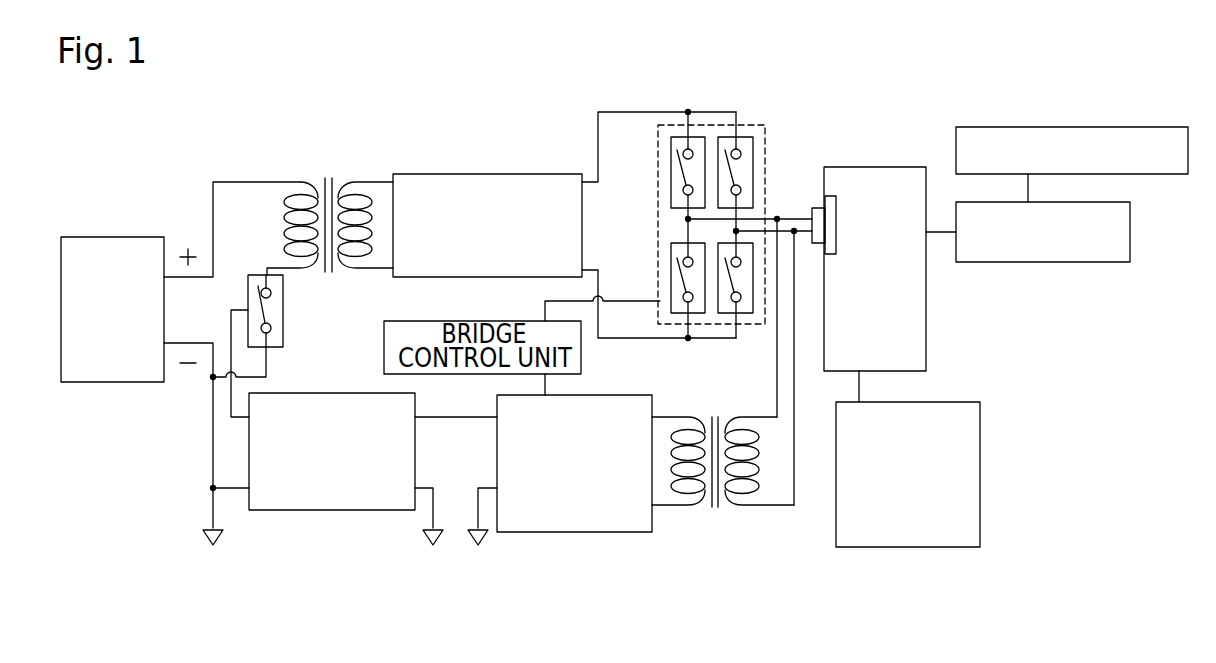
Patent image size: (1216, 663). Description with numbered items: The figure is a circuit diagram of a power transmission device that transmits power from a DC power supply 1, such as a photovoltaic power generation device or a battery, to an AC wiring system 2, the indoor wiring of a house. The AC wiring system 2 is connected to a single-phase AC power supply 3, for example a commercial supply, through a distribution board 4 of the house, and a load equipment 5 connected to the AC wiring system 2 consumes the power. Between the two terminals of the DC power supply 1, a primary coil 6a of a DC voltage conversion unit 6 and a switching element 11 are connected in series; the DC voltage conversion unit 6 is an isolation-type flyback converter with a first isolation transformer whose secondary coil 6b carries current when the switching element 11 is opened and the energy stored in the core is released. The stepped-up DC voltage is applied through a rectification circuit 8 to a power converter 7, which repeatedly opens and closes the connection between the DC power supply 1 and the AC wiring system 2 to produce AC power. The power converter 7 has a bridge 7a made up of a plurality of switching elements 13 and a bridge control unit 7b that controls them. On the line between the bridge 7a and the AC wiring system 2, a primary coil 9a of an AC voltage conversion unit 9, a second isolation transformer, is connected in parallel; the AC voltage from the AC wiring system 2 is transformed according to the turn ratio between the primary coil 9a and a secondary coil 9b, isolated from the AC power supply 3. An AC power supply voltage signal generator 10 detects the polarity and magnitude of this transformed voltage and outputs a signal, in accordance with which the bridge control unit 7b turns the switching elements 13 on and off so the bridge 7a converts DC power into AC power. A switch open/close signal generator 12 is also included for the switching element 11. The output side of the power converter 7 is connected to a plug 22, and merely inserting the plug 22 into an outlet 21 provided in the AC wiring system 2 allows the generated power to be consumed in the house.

The DC power supply 1 is at (140, 237).
The AC wiring system 2 is at (926, 330).
The AC power supply 3 is at (1030, 127).
The distribution board 4 is at (1038, 262).
The load equipment 5 is at (980, 480).
The DC voltage conversion unit 6 is at (318, 198).
The primary coil 6a is at (290, 224).
The secondary coil 6b is at (362, 200).
The power converter 7 is at (696, 244).
The bridge 7a is at (700, 323).
The bridge control unit 7b is at (581, 353).
The rectification circuit 8 is at (535, 174).
The AC voltage conversion unit 9 is at (743, 484).
The primary coil 9a is at (750, 470).
The secondary coil 9b is at (688, 470).
The AC power supply voltage signal generator 10 is at (587, 532).
The switching element 11 is at (283, 310).
The switch open/close signal generator 12 is at (330, 393).
The switching elements 13 is at (671, 247).
The outlet 21 is at (830, 198).
The plug 22 is at (815, 210).